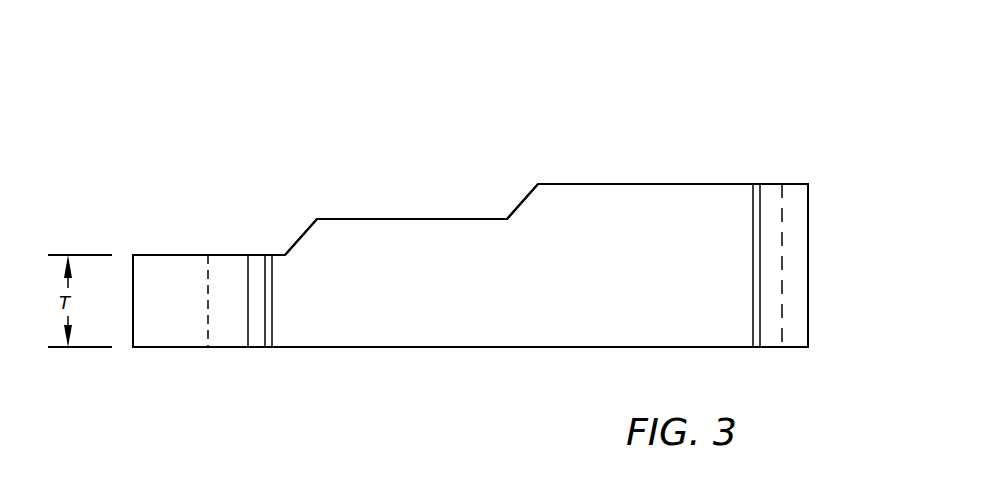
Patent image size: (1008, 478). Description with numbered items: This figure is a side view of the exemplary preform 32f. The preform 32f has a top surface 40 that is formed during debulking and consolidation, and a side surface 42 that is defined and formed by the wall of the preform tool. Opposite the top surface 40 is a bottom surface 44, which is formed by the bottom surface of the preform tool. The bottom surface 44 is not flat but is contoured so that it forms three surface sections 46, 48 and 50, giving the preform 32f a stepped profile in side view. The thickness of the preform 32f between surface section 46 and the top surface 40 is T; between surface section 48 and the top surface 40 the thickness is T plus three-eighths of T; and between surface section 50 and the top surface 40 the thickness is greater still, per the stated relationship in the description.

The preform 32f is at (808, 257).
The top surface 40 is at (344, 347).
The side surface 42 is at (725, 213).
The bottom surface 44 is at (431, 178).
The surface section 46 is at (202, 255).
The surface section 48 is at (373, 219).
The surface section 50 is at (588, 184).